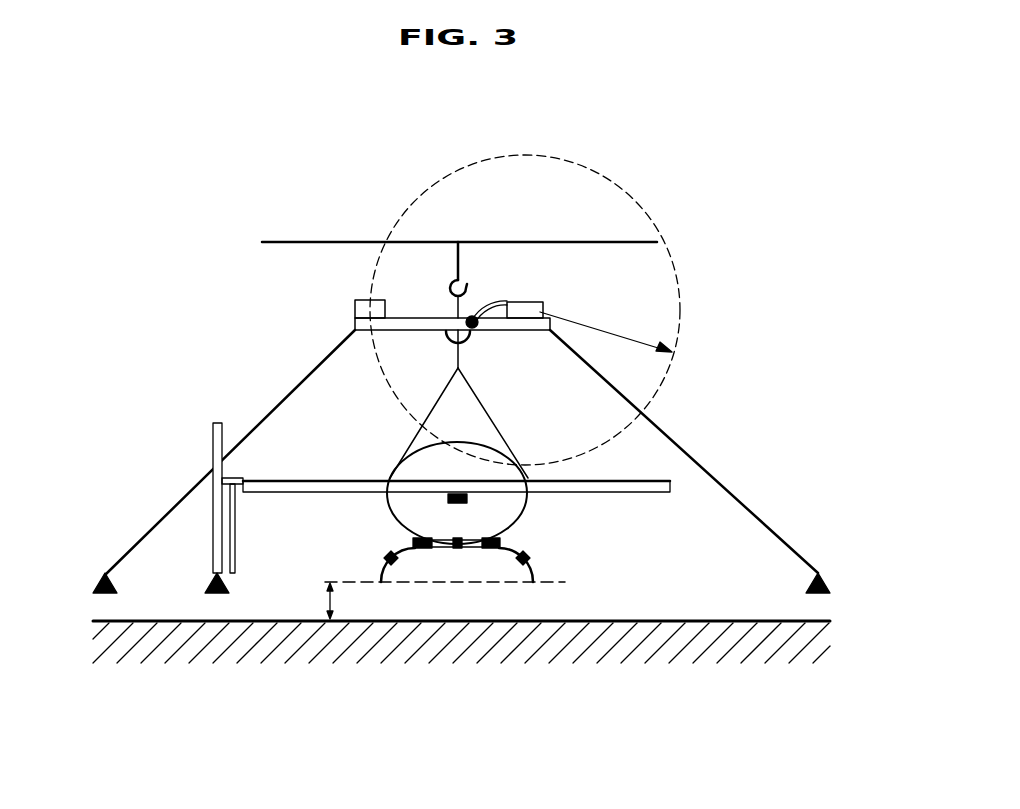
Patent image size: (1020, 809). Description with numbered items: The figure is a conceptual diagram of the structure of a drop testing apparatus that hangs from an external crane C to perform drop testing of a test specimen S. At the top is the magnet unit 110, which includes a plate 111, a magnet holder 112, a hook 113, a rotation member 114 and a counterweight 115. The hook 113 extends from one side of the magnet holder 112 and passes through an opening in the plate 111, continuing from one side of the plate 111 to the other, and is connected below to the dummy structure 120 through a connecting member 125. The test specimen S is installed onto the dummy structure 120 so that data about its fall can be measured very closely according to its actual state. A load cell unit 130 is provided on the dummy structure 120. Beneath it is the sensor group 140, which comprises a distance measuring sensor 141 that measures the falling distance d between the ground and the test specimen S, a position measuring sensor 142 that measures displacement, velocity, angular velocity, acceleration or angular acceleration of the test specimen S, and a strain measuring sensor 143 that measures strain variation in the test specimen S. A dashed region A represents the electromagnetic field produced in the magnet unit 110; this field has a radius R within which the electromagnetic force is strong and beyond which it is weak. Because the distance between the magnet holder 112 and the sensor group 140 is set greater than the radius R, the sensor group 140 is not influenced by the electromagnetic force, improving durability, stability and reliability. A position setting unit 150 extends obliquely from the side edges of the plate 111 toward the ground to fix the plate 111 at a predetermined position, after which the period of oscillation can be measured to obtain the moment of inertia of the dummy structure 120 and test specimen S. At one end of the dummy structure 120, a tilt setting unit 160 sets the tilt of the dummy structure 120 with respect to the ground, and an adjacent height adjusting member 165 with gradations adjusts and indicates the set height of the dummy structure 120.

The magnet unit 110 is at (444, 273).
The plate 111 is at (422, 318).
The magnet holder 112 is at (543, 305).
The hook 113 is at (489, 304).
The rotation member 114 is at (477, 328).
The counterweight 115 is at (355, 308).
The dummy structure 120 is at (528, 470).
The connecting member 125 is at (476, 397).
The load cell unit 130 is at (413, 542).
The sensor group 140 is at (457, 627).
The distance measuring sensor 141 is at (457, 549).
The position measuring sensor 142 is at (455, 504).
The strain measuring sensor 143 is at (519, 562).
The position setting unit 150 is at (684, 450).
The tilt setting unit 160 is at (213, 440).
The height adjusting member 165 is at (235, 553).
The crane C is at (497, 241).
The electromagnetic field region A is at (681, 297).
The radius R is at (606, 332).
The test specimen S is at (531, 572).
The falling distance d is at (318, 601).